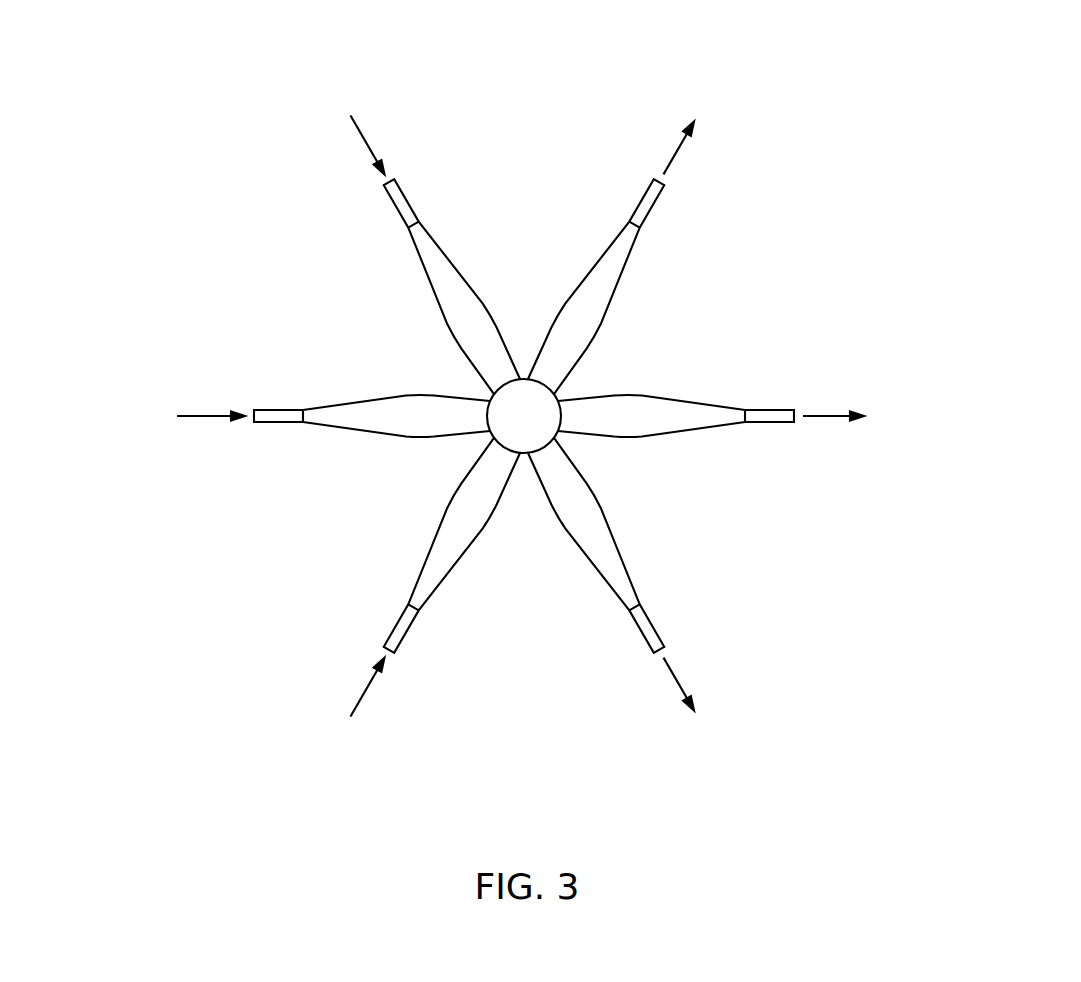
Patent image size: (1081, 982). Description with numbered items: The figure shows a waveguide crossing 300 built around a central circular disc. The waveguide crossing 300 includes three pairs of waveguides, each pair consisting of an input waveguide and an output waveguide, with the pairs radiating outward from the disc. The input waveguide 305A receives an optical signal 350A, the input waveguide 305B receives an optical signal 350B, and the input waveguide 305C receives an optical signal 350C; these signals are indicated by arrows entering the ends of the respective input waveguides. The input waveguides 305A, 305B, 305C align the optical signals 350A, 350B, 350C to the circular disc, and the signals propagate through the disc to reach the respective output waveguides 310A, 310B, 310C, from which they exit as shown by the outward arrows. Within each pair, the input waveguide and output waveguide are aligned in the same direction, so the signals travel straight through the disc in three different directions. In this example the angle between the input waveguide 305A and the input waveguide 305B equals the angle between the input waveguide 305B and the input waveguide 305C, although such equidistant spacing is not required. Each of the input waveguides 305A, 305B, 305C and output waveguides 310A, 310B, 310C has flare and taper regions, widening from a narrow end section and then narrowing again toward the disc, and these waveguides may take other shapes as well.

The waveguide crossing 300 is at (917, 124).
The input waveguide 305A is at (413, 208).
The input waveguide 305B is at (333, 432).
The input waveguide 305C is at (417, 617).
The output waveguide 310A is at (627, 612).
The output waveguide 310B is at (704, 436).
The output waveguide 310C is at (630, 247).
The optical signal 350A is at (369, 140).
The optical signal 350B is at (205, 413).
The optical signal 350C is at (365, 692).